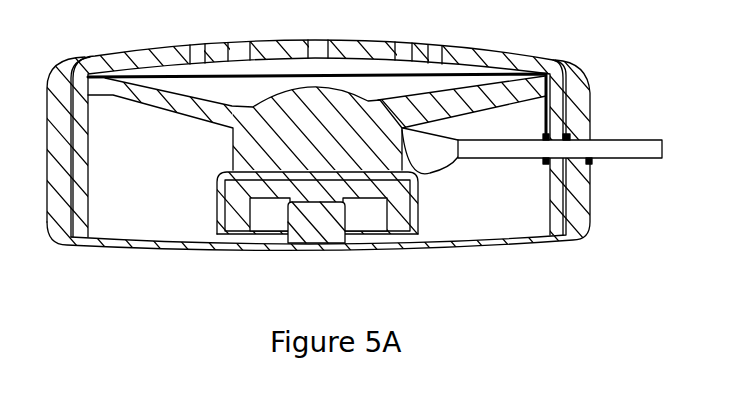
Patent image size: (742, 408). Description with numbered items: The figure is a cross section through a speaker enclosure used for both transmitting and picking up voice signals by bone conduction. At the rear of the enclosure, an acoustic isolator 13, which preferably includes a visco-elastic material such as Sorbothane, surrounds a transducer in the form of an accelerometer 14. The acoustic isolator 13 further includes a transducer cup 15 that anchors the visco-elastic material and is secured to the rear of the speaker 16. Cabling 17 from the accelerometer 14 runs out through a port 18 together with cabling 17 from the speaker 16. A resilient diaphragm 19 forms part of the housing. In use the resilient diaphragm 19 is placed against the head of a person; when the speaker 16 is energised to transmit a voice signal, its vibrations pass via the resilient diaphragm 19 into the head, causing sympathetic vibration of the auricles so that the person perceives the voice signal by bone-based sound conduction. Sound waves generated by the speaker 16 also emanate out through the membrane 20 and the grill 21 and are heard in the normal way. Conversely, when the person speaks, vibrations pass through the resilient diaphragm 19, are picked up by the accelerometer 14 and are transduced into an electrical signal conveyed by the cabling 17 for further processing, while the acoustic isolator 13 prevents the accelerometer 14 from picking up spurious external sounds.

The acoustic isolator 13 is at (400, 215).
The accelerometer 14 is at (310, 238).
The transducer cup 15 is at (220, 227).
The speaker 16 is at (407, 108).
The cabling 17 is at (637, 148).
The port 18 is at (580, 137).
The resilient diaphragm 19 is at (500, 247).
The membrane 20 is at (285, 75).
The grill 21 is at (170, 57).